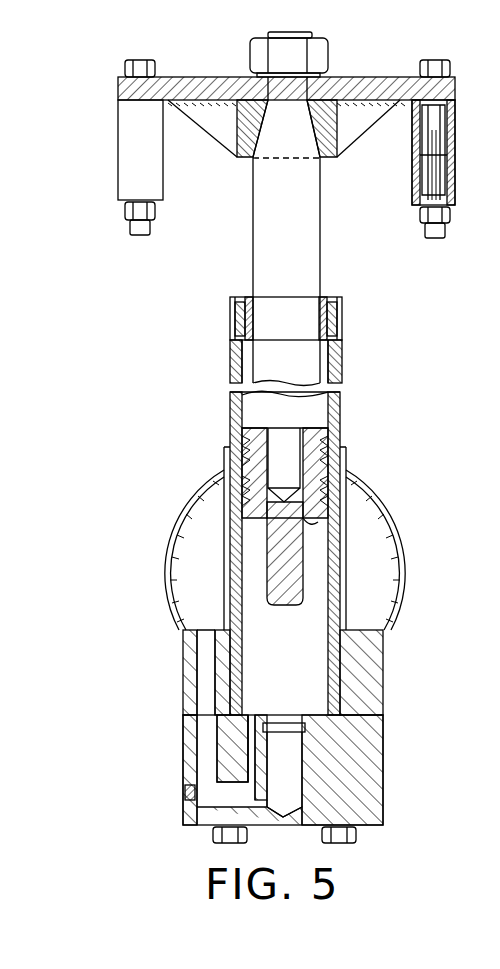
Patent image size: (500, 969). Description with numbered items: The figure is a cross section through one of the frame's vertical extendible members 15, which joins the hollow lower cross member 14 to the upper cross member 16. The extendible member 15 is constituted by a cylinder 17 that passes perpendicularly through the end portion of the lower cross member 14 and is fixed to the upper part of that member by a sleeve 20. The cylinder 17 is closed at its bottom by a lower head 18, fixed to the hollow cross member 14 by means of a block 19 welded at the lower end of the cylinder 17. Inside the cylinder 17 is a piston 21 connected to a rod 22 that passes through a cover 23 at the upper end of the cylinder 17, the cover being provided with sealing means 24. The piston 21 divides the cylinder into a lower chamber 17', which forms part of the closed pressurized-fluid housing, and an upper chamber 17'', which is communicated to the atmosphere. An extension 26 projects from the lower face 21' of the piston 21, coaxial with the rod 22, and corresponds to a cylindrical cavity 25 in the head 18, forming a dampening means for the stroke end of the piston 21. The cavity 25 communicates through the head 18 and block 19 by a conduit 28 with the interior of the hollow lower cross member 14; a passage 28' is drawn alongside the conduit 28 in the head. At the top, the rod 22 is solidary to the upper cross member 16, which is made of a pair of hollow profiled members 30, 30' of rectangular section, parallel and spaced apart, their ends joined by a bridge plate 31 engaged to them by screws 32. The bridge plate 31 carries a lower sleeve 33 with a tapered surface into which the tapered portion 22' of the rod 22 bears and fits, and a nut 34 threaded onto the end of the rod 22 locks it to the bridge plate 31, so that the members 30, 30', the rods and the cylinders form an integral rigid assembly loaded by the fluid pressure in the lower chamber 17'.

The hollow lower cross member 14 is at (170, 604).
The vertical extendible member 15 is at (229, 410).
The upper cross member 16 is at (140, 158).
The cylinder 17 is at (361, 557).
The lower chamber 17' is at (305, 678).
The upper chamber 17'' is at (318, 361).
The lower head 18 is at (374, 742).
The block 19 is at (374, 682).
The sleeve 20 is at (228, 548).
The piston 21 is at (319, 472).
The lower face of piston 21' is at (366, 498).
The rod 22 is at (319, 409).
The tapered portion of rod 22' is at (269, 231).
The cover 23 is at (337, 330).
The sealing means 24 is at (342, 300).
The cylindrical cavity 25 is at (297, 780).
The extension 26 is at (273, 606).
The conduit 28 is at (200, 814).
The channel 28' is at (261, 729).
The hollow profiled member 30 is at (158, 167).
The hollow profiled member 30' is at (418, 169).
The bridge plate 31 is at (353, 80).
The screw 32 is at (157, 68).
The lower sleeve 33 is at (340, 125).
The nut 34 is at (323, 45).